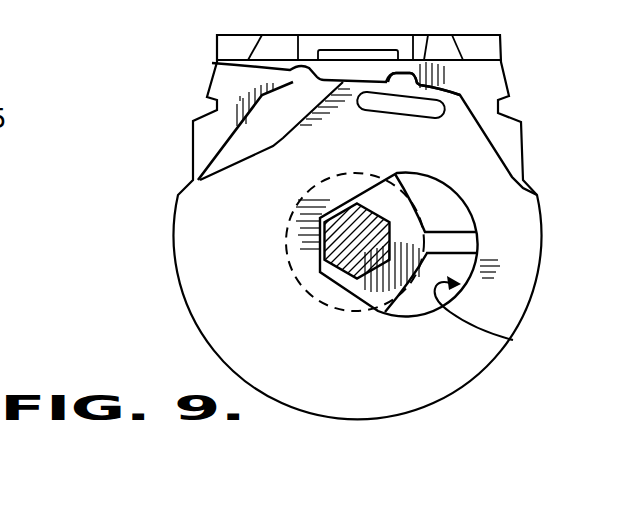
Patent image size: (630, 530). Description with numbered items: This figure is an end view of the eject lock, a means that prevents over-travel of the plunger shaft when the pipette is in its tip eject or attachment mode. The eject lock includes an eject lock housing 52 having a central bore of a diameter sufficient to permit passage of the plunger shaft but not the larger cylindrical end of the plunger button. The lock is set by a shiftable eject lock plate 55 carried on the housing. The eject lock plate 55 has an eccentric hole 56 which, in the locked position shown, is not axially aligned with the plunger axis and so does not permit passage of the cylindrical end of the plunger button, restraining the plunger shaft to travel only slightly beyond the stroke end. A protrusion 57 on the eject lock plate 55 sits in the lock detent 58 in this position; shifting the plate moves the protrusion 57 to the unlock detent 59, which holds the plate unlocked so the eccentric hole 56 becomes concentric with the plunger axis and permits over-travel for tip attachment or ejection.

The eject lock housing 52 is at (455, 222).
The eject lock plate 55 is at (536, 219).
The eccentric hole 56 is at (513, 340).
The protrusion 57 is at (418, 83).
The lock detent 58 is at (415, 74).
The unlock detent 59 is at (214, 64).